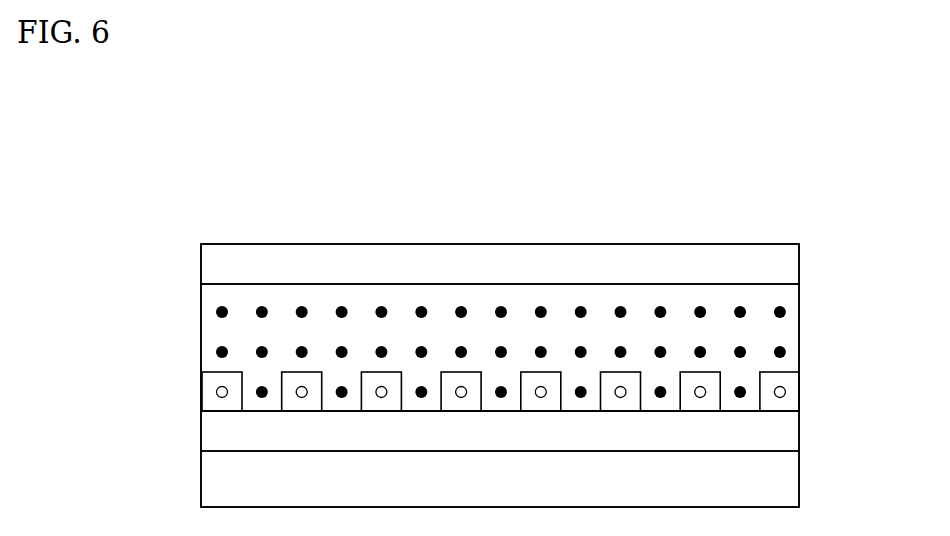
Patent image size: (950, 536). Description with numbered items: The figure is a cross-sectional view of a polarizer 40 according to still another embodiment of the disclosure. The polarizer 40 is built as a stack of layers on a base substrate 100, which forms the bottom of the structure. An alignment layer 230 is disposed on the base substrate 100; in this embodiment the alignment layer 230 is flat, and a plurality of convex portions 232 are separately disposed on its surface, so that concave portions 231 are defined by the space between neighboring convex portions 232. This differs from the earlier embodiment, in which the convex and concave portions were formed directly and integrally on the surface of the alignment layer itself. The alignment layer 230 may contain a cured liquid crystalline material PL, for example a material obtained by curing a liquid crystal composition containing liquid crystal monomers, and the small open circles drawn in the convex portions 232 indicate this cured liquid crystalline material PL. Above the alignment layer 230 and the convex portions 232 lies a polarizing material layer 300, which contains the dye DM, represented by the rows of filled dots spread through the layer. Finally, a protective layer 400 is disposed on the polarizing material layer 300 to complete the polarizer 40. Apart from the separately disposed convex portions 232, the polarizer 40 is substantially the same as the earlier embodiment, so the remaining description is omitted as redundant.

The polarizer 40 is at (712, 208).
The protective layer 400 is at (787, 268).
The polarizing material layer 300 is at (787, 329).
The convex portions 232 is at (778, 373).
The concave portions 231 is at (749, 403).
The alignment layer 230 is at (787, 443).
The base substrate 100 is at (787, 479).
The dye DM is at (221, 350).
The cured liquid crystalline material PL is at (216, 392).